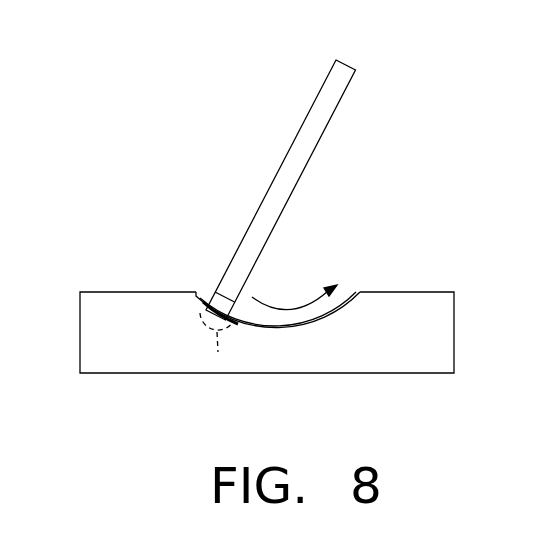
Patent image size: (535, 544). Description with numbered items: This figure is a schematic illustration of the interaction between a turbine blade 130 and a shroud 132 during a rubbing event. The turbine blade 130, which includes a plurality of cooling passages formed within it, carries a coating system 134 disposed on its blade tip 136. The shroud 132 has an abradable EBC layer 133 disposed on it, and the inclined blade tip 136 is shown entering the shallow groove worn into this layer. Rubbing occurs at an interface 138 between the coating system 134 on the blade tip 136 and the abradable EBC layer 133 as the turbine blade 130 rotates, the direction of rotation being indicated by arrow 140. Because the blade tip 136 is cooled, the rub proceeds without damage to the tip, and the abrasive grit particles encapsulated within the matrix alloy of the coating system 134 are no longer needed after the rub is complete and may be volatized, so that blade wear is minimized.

The turbine blade 130 is at (343, 62).
The shroud 132 is at (80, 338).
The abradable EBC layer 133 is at (361, 291).
The coating system 134 is at (210, 308).
The blade tip 136 is at (217, 300).
The interface 138 is at (218, 354).
The arrow 140 is at (288, 310).